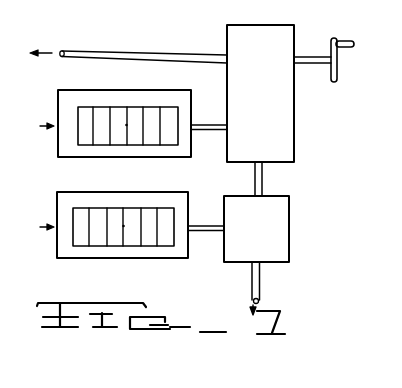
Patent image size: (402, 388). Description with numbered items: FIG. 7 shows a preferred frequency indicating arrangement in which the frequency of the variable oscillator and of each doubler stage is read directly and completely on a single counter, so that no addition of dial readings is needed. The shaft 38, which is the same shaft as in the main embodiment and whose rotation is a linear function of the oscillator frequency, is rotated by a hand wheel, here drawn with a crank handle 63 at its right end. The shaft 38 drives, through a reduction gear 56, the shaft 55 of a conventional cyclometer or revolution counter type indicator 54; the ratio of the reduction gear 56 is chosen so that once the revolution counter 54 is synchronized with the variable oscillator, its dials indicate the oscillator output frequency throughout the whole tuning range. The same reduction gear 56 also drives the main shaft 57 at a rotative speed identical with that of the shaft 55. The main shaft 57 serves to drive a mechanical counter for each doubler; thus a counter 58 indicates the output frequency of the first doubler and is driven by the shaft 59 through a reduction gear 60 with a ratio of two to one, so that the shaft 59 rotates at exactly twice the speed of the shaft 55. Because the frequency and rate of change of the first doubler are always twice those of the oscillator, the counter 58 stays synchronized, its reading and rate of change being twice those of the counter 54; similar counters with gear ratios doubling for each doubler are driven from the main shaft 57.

The shaft 38 is at (141, 48).
The revolution counter 54 is at (60, 105).
The shaft 55 is at (209, 124).
The reduction gear 56 is at (296, 118).
The main shaft 57 is at (262, 192).
The counter 58 is at (58, 208).
The shaft 59 is at (204, 225).
The reduction gear 60 is at (286, 238).
The hand crank 63 is at (337, 72).